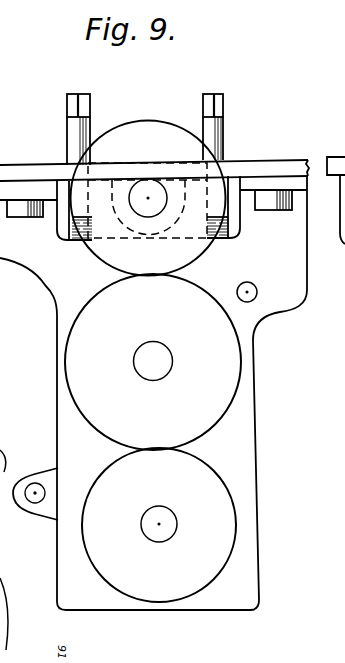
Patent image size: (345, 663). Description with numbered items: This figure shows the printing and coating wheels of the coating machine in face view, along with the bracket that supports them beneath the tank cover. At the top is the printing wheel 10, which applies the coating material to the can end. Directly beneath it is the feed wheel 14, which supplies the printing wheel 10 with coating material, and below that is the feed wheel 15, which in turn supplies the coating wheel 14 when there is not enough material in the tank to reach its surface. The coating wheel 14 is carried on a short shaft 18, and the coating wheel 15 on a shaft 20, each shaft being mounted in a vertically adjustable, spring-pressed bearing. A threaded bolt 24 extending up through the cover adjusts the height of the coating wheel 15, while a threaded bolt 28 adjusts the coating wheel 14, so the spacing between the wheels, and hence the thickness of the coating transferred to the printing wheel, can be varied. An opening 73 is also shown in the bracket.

The printing wheel 10 is at (163, 153).
The feed wheel 14 is at (162, 323).
The feed wheel 15 is at (163, 493).
The short shaft 18 is at (165, 366).
The shaft 20 is at (170, 528).
The threaded bolt 24 is at (91, 121).
The threaded bolt 28 is at (223, 125).
The hole 73 is at (275, 287).